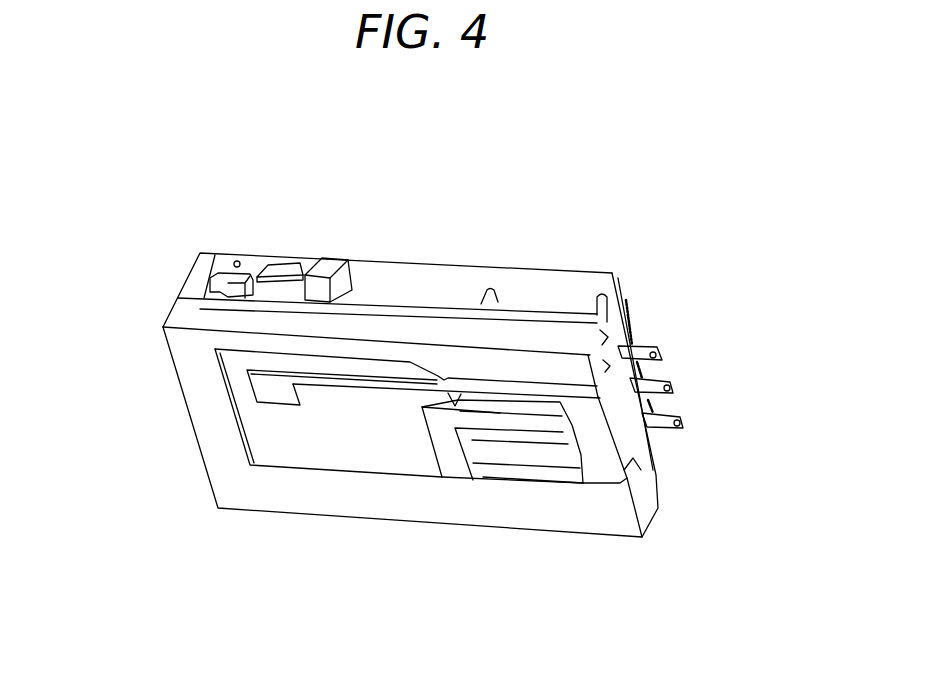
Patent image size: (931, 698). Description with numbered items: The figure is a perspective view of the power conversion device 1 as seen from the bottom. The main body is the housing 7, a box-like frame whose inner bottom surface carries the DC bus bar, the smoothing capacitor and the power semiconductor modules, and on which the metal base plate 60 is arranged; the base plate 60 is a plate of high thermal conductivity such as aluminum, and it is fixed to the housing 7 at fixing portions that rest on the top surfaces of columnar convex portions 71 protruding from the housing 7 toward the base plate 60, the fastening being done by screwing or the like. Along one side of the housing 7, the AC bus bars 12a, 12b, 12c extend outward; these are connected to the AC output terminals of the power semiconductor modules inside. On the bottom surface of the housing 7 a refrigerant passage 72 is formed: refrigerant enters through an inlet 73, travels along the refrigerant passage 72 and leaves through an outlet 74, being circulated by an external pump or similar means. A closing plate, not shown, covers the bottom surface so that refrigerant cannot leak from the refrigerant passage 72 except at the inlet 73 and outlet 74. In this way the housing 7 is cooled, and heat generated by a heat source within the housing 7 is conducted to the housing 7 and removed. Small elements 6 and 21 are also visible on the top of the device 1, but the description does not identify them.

The power conversion device 1 is at (140, 148).
The housing 7 is at (180, 383).
The refrigerant passage 72 is at (347, 458).
The inlet 73 is at (628, 478).
The base plate 60 is at (408, 262).
The component 6 is at (235, 260).
The component 21 is at (290, 265).
The columnar convex portion 71 is at (331, 250).
The outlet 74 is at (603, 375).
The AC bus bar 12a is at (683, 427).
The AC bus bar 12b is at (673, 388).
The AC bus bar 12c is at (662, 353).